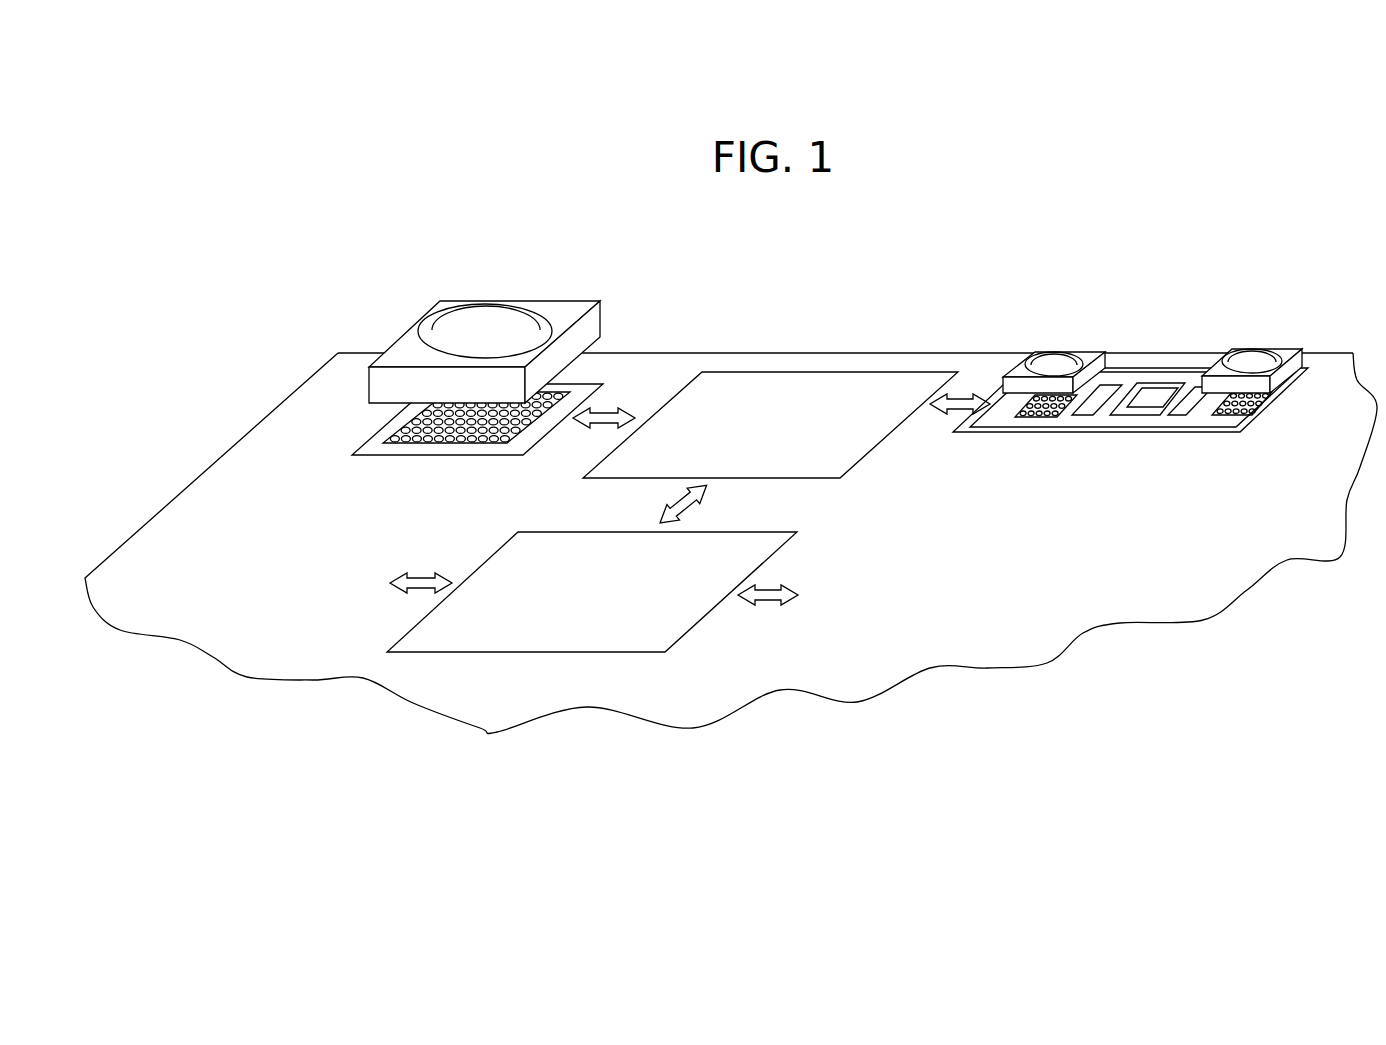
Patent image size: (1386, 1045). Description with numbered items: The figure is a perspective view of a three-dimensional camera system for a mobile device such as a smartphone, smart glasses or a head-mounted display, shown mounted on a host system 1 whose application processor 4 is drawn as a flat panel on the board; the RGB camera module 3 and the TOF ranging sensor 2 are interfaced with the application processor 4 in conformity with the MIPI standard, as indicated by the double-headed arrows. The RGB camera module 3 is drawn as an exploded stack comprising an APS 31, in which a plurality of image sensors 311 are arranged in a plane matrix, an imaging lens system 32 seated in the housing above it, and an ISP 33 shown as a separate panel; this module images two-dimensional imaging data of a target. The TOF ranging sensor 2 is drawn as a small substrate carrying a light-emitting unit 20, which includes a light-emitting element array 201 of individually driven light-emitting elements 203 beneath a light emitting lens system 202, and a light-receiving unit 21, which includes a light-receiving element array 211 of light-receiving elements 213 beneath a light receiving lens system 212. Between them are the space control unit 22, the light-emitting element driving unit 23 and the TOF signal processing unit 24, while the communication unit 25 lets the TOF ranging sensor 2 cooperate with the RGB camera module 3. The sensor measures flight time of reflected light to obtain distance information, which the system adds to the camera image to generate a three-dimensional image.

The host system 1 is at (1272, 187).
The TOF ranging sensor 2 is at (1150, 366).
The RGB camera module 3 is at (477, 376).
The application processor 4 is at (533, 654).
The light-emitting unit 20 is at (1243, 313).
The light-receiving unit 21 is at (1048, 313).
The space control unit 22 is at (1136, 413).
The light-emitting element driving unit 23 is at (1177, 413).
The TOF signal processing unit 24 is at (1101, 414).
The communication unit 25 is at (980, 422).
The APS 31 is at (382, 456).
The imaging lens system 32 is at (486, 318).
The ISP 33 is at (802, 382).
The light-emitting element array 201 is at (1243, 393).
The light emitting lens system 202 is at (1252, 325).
The light-emitting elements 203 is at (1234, 414).
The light-receiving element array 211 is at (1048, 393).
The light receiving lens system 212 is at (1056, 327).
The light-receiving elements 213 is at (1043, 416).
The image sensors 311 is at (497, 444).